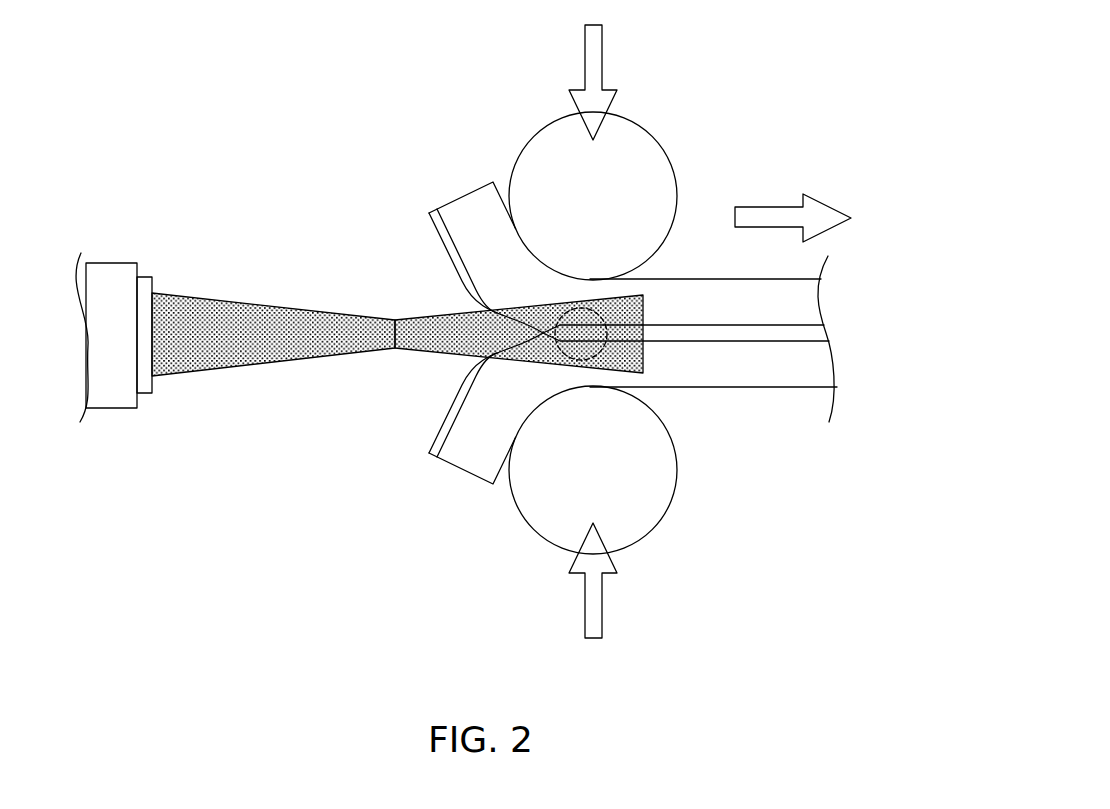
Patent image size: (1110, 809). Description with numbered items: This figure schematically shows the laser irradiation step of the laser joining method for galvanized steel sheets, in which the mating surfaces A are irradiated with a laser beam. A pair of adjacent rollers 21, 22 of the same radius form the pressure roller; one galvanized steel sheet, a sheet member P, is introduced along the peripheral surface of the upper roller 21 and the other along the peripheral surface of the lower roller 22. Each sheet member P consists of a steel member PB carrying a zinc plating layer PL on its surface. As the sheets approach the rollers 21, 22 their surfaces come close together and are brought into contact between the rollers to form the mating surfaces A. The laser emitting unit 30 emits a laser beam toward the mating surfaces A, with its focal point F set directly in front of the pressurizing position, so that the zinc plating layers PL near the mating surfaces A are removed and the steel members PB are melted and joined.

The upper roller 21 is at (653, 138).
The lower roller 22 is at (673, 498).
The laser emitting unit 30 is at (110, 428).
The focal point F is at (394, 349).
The mating surfaces A is at (603, 352).
The sheet members P is at (437, 93).
The steel members PB is at (476, 194).
The zinc plating layers PL is at (447, 250).